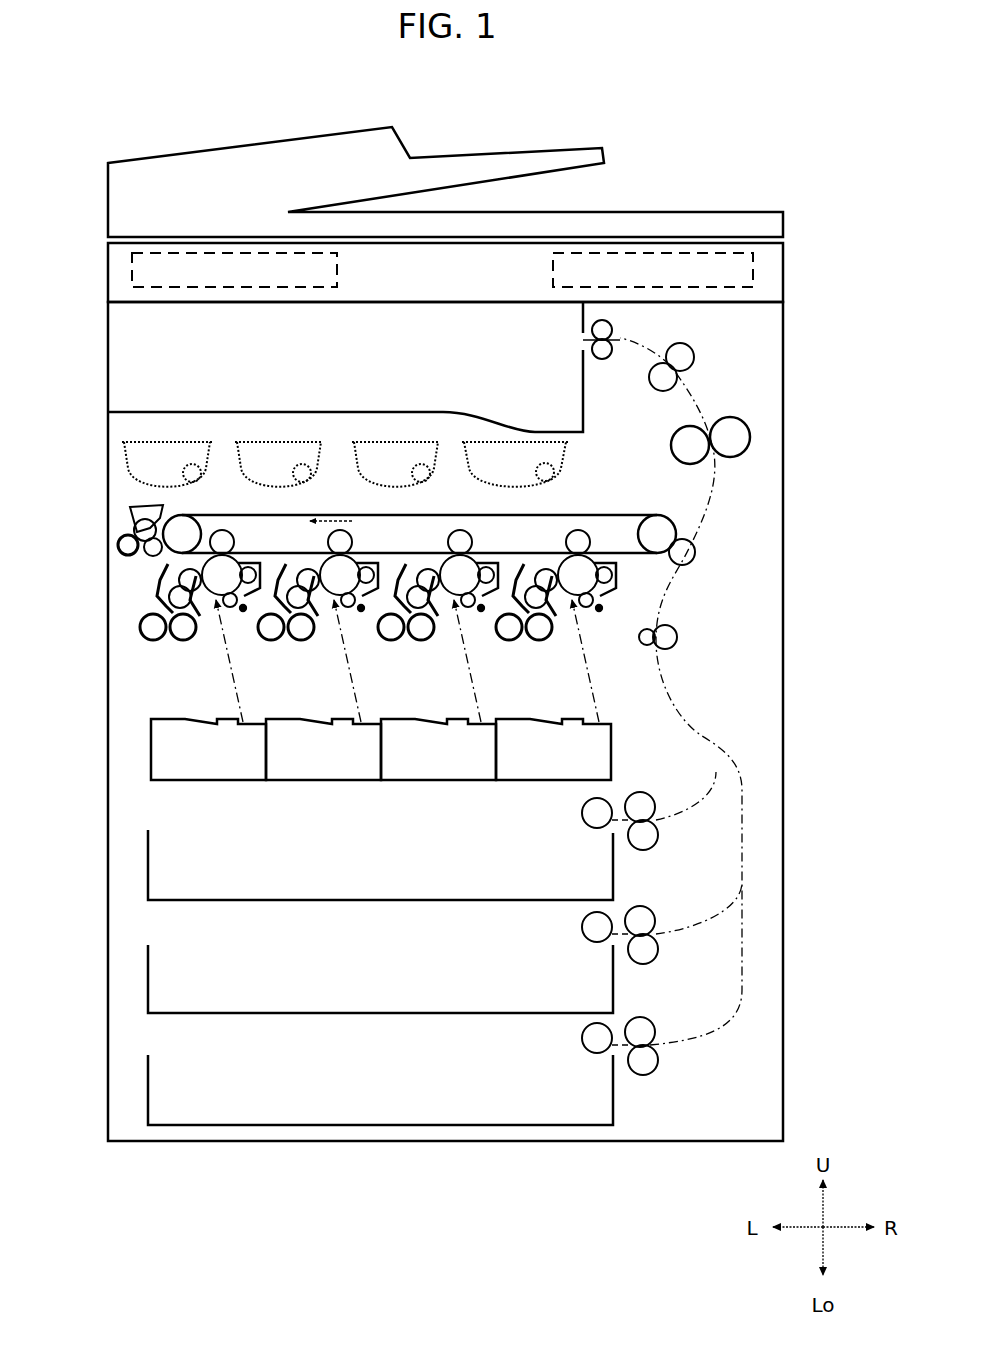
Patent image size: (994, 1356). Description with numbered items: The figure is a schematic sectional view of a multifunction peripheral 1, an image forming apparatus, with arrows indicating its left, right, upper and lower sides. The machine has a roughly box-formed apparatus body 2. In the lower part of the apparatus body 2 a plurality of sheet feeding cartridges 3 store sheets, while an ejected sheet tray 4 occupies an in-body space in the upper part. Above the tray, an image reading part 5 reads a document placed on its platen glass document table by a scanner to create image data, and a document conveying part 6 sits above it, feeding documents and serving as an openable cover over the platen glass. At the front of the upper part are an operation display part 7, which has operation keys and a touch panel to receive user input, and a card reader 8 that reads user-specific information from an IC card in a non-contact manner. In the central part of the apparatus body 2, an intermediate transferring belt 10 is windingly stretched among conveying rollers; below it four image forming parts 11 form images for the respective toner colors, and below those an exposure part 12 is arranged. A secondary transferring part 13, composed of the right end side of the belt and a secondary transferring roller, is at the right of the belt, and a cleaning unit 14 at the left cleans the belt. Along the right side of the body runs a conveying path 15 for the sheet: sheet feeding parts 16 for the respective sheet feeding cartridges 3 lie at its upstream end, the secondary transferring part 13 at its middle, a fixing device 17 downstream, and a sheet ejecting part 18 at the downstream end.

The multifunction peripheral 1 is at (110, 76).
The apparatus body 2 is at (107, 478).
The sheet feeding cartridges 3 is at (147, 867).
The ejected sheet tray 4 is at (250, 410).
The image reading part 5 is at (135, 242).
The document conveying part 6 is at (288, 135).
The operation display part 7 is at (755, 272).
The card reader 8 is at (290, 288).
The intermediate transferring belt 10 is at (590, 515).
The image forming parts 11 is at (202, 646).
The exposure part 12 is at (142, 770).
The secondary transferring part 13 is at (702, 562).
The cleaning unit 14 is at (127, 538).
The conveying path 15 is at (656, 597).
The sheet feeding parts 16 is at (662, 836).
The fixing device 17 is at (722, 466).
The sheet ejecting part 18 is at (626, 332).